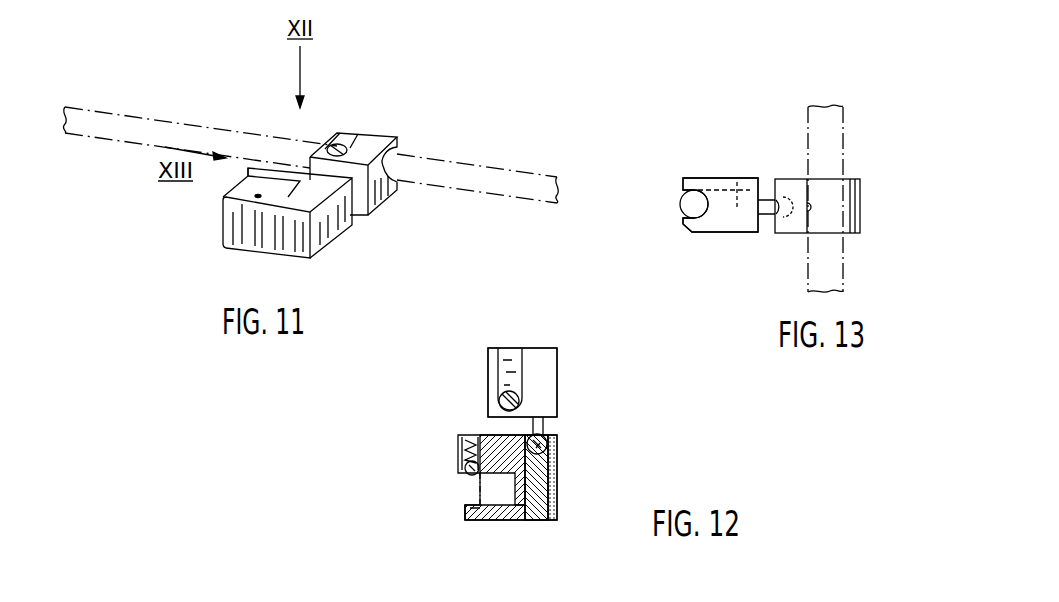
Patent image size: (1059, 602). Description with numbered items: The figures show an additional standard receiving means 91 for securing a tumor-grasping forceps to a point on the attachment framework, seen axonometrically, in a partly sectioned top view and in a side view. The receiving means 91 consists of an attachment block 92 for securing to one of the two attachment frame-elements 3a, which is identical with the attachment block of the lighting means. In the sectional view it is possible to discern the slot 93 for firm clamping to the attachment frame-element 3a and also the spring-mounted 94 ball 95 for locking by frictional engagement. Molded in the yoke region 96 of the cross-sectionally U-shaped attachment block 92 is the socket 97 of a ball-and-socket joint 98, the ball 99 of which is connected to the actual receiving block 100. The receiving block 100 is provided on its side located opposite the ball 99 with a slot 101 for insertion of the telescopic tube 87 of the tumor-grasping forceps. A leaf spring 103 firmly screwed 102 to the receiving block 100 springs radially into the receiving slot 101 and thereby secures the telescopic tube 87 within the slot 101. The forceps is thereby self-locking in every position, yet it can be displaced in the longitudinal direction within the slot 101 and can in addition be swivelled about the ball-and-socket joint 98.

In FIG. 13, the attachment frame-element 3a is at (842, 127).
In FIG. 11, the telescopic tube 87 is at (498, 168).
In FIG. 11, the standard receiving means 91 is at (391, 205).
In FIG. 12, the standard receiving means 91 is at (565, 388).
In FIG. 13, the standard receiving means 91 is at (740, 160).
In FIG. 11, the attachment block 92 is at (328, 237).
In FIG. 12, the attachment block 92 is at (489, 507).
In FIG. 13, the attachment block 92 is at (858, 222).
In FIG. 12, the slot 93 is at (467, 508).
In FIG. 12, the spring mounting 94 is at (458, 443).
In FIG. 12, the ball 95 is at (472, 476).
In FIG. 12, the yoke region 96 is at (553, 498).
In FIG. 12, the socket 97 is at (557, 472).
In FIG. 12, the ball-and-socket joint 98 is at (556, 426).
In FIG. 12, the ball 99 is at (552, 448).
In FIG. 12, the receiving block 100 is at (543, 358).
In FIG. 13, the receiving block 100 is at (732, 229).
In FIG. 13, the slot 101 is at (682, 205).
In FIG. 12, the screw 102 is at (500, 400).
In FIG. 12, the leaf spring 103 is at (510, 347).
In FIG. 13, the leaf spring 103 is at (682, 190).